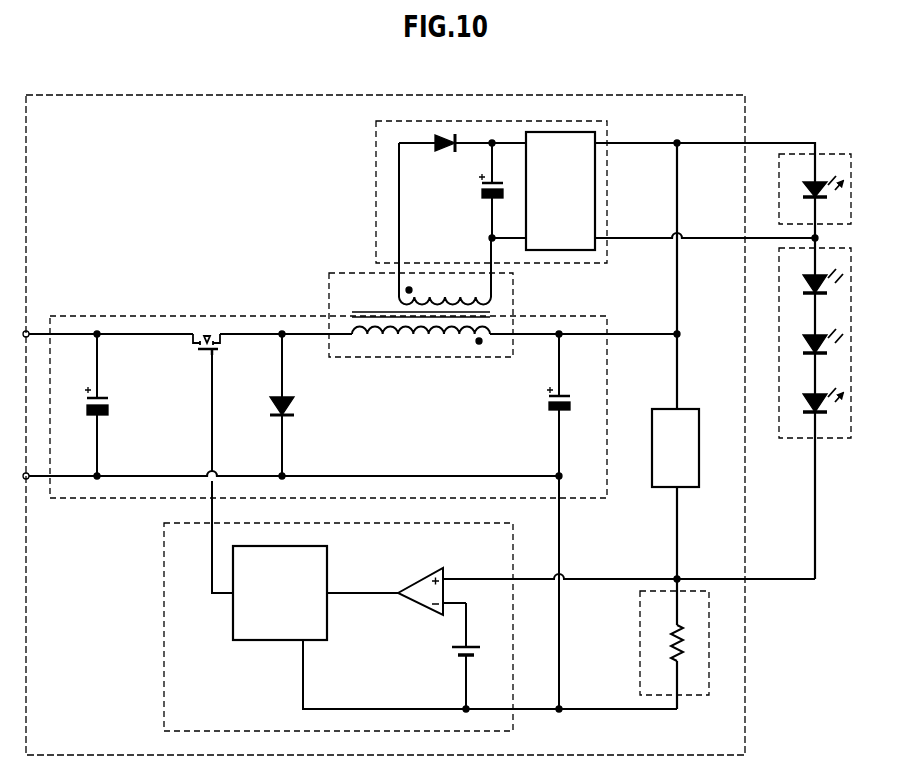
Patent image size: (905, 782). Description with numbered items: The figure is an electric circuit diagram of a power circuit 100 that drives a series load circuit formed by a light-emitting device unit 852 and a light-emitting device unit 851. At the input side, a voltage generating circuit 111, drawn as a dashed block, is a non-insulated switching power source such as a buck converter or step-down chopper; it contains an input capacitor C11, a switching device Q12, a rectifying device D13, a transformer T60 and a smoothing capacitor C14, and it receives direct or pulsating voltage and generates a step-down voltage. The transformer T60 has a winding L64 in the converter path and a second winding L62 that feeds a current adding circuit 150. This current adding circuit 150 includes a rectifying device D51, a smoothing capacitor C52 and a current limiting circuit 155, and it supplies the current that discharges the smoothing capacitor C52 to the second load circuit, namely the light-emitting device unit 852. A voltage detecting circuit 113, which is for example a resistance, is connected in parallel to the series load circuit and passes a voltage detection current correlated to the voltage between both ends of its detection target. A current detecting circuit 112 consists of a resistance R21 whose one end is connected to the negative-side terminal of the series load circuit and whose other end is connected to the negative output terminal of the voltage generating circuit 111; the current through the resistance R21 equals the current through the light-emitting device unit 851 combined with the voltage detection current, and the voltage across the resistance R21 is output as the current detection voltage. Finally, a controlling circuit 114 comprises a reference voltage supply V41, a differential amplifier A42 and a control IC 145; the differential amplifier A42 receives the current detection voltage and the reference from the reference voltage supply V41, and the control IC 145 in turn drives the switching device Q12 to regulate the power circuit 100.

The power circuit 100 is at (750, 90).
The voltage generating circuit 111 is at (612, 309).
The input capacitor C11 is at (110, 402).
The switching device Q12 is at (210, 332).
The rectifying device D13 is at (290, 402).
The smoothing capacitor C14 is at (548, 411).
The transformer T60 is at (329, 283).
The winding L62 is at (455, 283).
The winding L64 is at (420, 340).
The current adding circuit 150 is at (612, 112).
The rectifying device D51 is at (443, 153).
The smoothing capacitor C52 is at (489, 200).
The current limiting circuit 155 is at (596, 192).
The light-emitting device unit 852 is at (856, 150).
The light-emitting device unit 851 is at (851, 438).
The voltage detecting circuit 113 is at (704, 404).
The controlling circuit 114 is at (164, 532).
The control IC 145 is at (332, 539).
The differential amplifier A42 is at (422, 576).
The reference voltage supply V41 is at (460, 658).
The current detecting circuit 112 is at (709, 695).
The resistance R21 is at (672, 636).